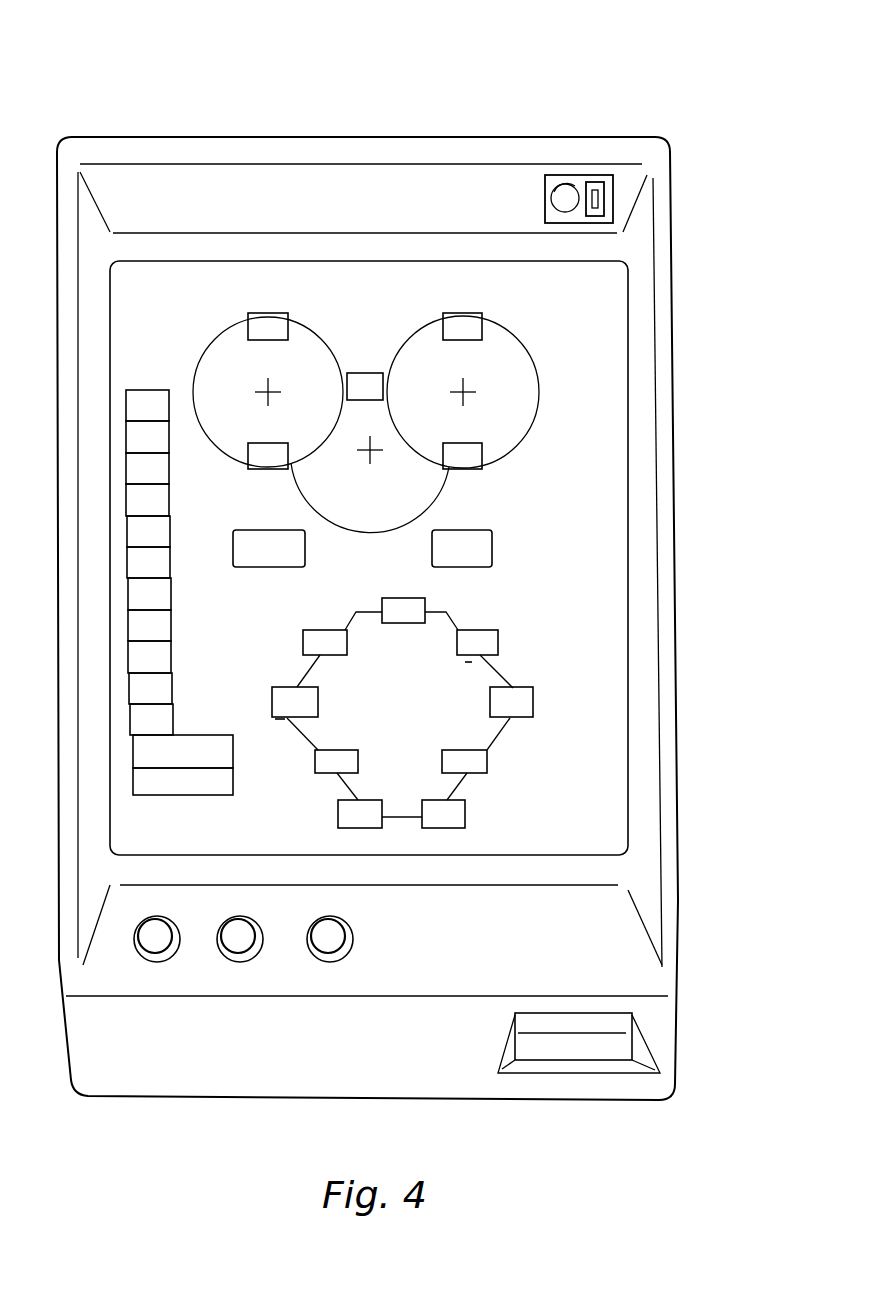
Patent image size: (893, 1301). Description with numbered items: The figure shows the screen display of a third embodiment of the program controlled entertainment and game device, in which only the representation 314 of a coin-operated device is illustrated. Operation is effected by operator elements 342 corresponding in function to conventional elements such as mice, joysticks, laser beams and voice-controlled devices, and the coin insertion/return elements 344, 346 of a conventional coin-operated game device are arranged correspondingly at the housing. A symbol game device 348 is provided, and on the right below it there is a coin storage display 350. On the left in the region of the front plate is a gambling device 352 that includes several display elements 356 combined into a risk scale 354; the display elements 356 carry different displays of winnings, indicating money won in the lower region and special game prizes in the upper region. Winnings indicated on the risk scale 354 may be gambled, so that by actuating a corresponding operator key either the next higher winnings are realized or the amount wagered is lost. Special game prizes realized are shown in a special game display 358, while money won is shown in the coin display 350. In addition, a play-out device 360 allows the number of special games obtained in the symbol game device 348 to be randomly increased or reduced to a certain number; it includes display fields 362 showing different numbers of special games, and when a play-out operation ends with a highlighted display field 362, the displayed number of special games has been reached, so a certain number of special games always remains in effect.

The representation of a coin-operated device 314 is at (493, 92).
The operator elements 342 is at (333, 936).
The coin insertion/return element 344 is at (613, 198).
The coin insertion/return element 346 is at (640, 1047).
The symbol game device 348 is at (533, 328).
The coin storage display 350 is at (492, 550).
The gambling device 352 is at (190, 592).
The risk scale 354 is at (171, 585).
The display elements 356 is at (165, 512).
The special game display 358 is at (305, 550).
The play-out device 360 is at (440, 713).
The display fields 362 is at (358, 752).